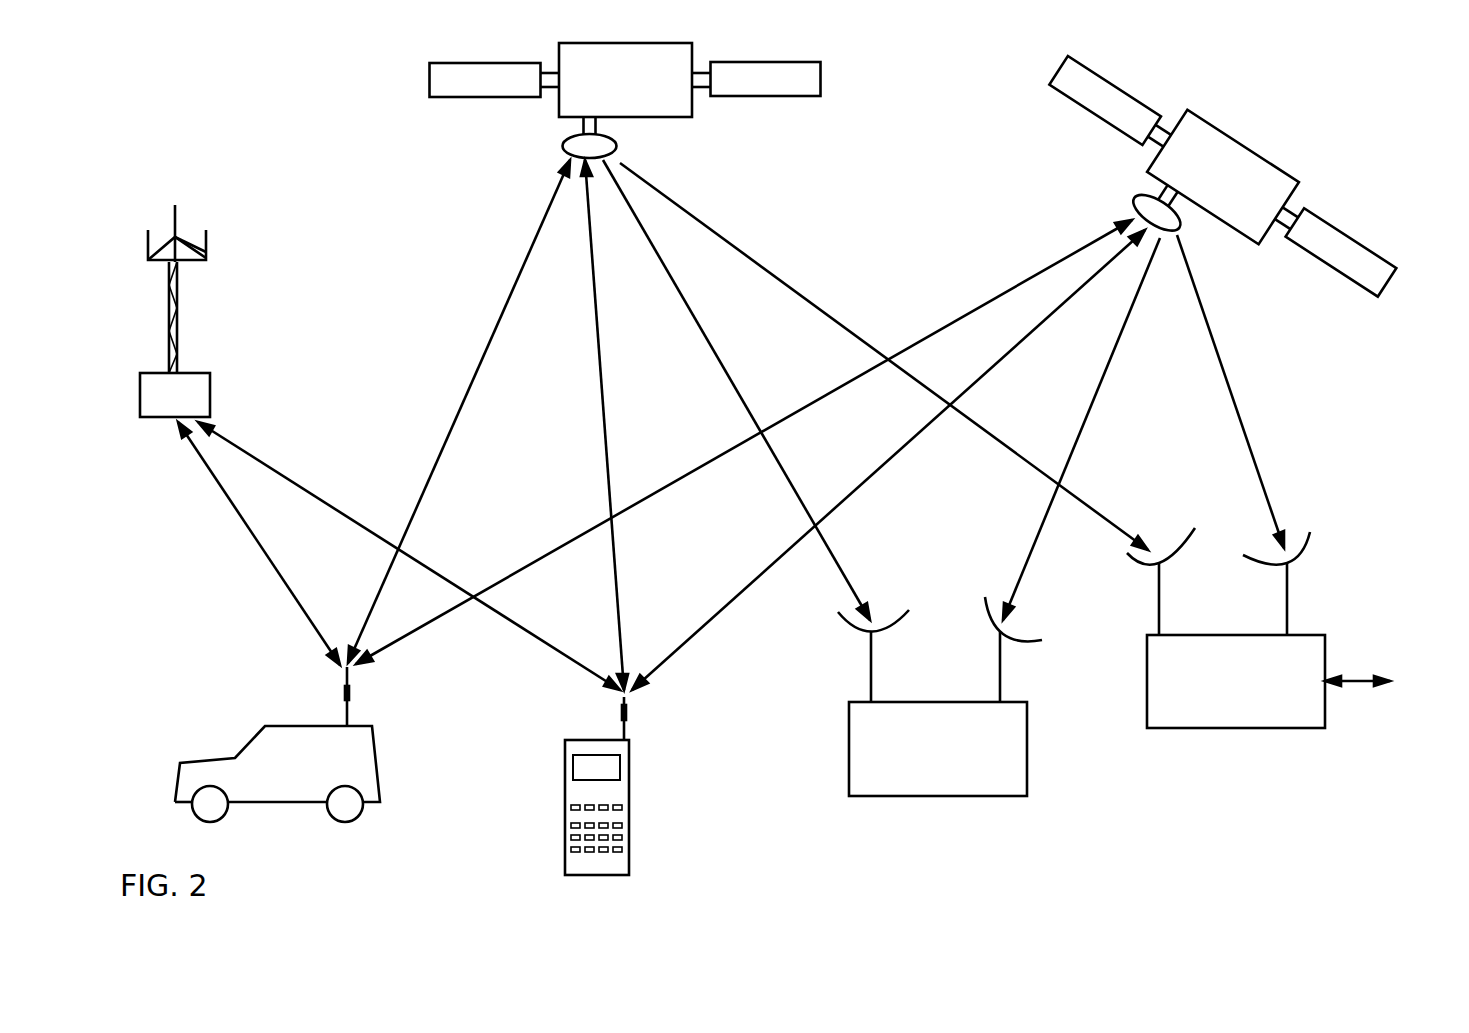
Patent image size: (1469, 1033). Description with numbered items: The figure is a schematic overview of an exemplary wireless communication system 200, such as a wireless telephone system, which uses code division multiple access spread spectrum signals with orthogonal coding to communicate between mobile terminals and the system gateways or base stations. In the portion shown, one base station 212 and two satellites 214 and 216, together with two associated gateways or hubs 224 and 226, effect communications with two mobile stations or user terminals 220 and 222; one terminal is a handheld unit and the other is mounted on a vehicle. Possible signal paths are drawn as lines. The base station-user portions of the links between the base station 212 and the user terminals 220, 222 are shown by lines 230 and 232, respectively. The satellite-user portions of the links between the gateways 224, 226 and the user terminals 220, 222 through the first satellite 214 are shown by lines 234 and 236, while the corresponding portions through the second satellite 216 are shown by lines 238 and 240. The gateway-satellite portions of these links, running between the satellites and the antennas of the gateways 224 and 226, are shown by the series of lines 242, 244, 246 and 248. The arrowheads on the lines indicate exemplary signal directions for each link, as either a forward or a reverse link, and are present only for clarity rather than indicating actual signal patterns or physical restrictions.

The communication system 200 is at (198, 115).
The base station 212 is at (194, 373).
The satellite 214 is at (802, 62).
The satellite 216 is at (1325, 215).
The user terminal 220 is at (600, 875).
The user terminal 222 is at (365, 723).
The gateway 224 is at (980, 796).
The gateway 226 is at (1282, 728).
The line 230 is at (210, 478).
The line 232 is at (245, 450).
The line 234 is at (488, 345).
The line 236 is at (605, 400).
The line 238 is at (708, 460).
The line 240 is at (757, 580).
The line 242 is at (748, 410).
The line 244 is at (830, 318).
The line 246 is at (1094, 400).
The line 248 is at (1240, 425).